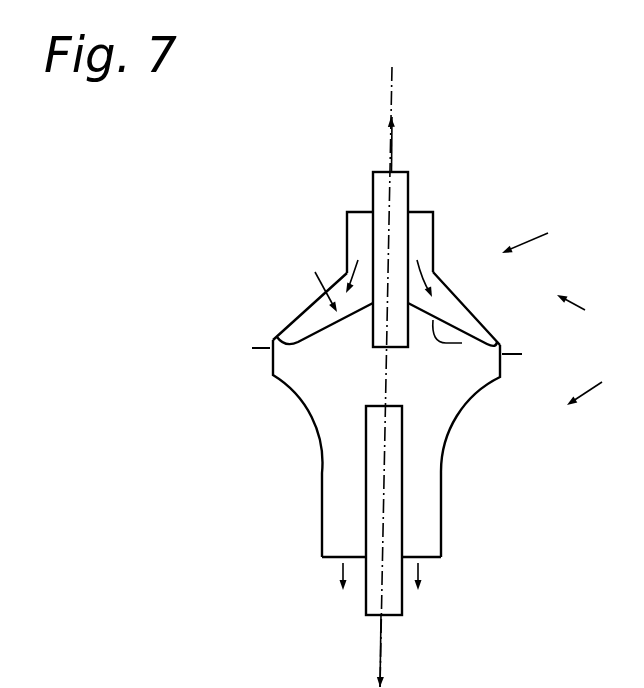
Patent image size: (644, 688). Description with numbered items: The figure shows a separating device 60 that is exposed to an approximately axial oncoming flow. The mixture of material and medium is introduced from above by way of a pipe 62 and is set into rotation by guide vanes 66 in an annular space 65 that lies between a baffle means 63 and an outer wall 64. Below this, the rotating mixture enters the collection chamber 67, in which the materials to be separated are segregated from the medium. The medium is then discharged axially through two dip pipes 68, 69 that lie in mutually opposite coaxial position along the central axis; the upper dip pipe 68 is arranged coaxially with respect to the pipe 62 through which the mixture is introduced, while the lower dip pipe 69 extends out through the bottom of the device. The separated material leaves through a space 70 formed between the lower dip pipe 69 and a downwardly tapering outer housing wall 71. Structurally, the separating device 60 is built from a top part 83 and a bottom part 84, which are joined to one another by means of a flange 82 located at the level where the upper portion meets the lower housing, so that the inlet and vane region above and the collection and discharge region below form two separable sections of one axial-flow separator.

The separating device 60 is at (542, 234).
The pipe 62 is at (423, 242).
The baffle means 63 is at (441, 343).
The outer wall 64 is at (472, 308).
The annular space 65 is at (317, 277).
The guide vanes 66 is at (307, 325).
The collection chamber 67 is at (335, 357).
The dip pipe 68 is at (398, 207).
The dip pipe 69 is at (390, 498).
The space 70 is at (352, 468).
The outer housing wall 71 is at (450, 442).
The flange 82 is at (262, 352).
The top part 83 is at (588, 314).
The bottom part 84 is at (599, 384).